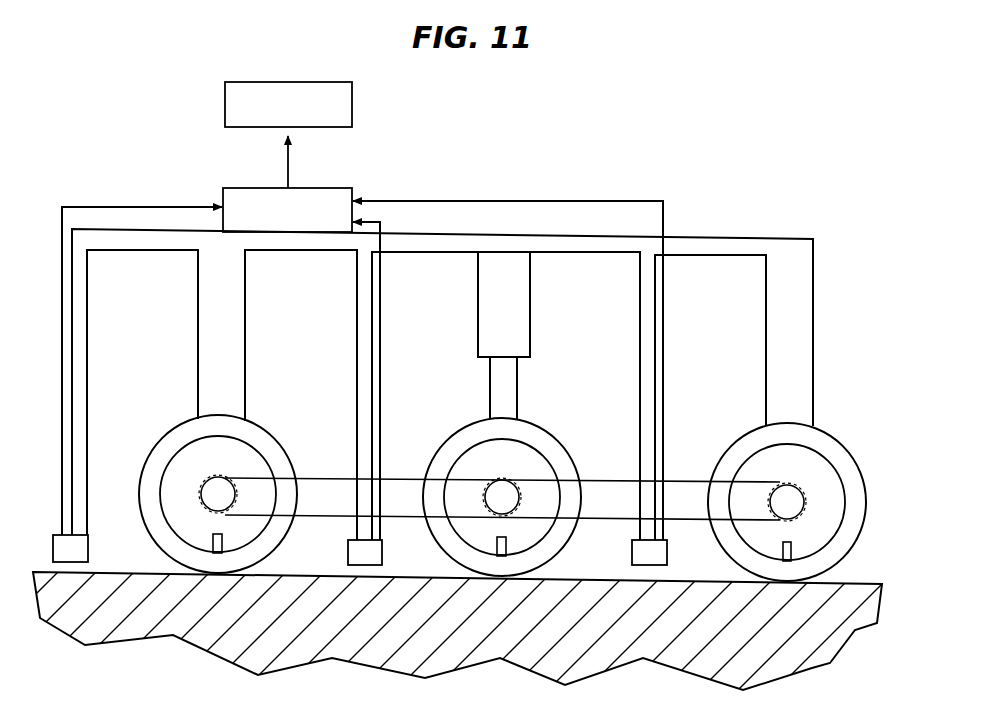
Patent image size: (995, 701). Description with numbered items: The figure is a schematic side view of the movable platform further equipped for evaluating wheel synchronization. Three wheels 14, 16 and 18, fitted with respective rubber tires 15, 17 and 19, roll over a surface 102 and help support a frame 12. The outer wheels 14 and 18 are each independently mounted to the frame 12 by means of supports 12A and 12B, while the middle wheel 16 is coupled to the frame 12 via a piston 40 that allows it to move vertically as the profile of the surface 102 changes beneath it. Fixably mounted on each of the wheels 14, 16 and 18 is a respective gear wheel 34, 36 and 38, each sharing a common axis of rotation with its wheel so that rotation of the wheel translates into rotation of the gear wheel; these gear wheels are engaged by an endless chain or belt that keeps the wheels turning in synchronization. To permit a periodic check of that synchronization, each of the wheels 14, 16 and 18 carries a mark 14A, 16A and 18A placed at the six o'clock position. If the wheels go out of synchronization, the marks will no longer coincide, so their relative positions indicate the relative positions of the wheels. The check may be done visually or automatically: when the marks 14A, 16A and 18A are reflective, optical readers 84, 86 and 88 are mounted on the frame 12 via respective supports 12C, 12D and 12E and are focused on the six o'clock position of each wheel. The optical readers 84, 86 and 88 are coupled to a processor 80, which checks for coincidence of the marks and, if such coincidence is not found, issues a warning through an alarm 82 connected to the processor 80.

The frame 12 is at (718, 240).
The support 12A is at (812, 320).
The support 12B is at (247, 300).
The support 12C is at (640, 345).
The support 12D is at (371, 340).
The support 12E is at (90, 296).
The wheel 14 is at (828, 480).
The mark 14A is at (792, 556).
The rubber tire 15 is at (820, 442).
The wheel 16 is at (462, 467).
The mark 16A is at (507, 552).
The rubber tire 17 is at (478, 433).
The wheel 18 is at (264, 462).
The mark 18A is at (224, 547).
The rubber tire 19 is at (252, 428).
The gear wheel 34 is at (783, 497).
The gear wheel 36 is at (492, 508).
The gear wheel 38 is at (204, 482).
The piston 40 is at (530, 288).
The processor 80 is at (252, 188).
The alarm 82 is at (352, 100).
The optical reader 84 is at (632, 548).
The optical reader 86 is at (350, 548).
The optical reader 88 is at (88, 548).
The surface 102 is at (688, 577).